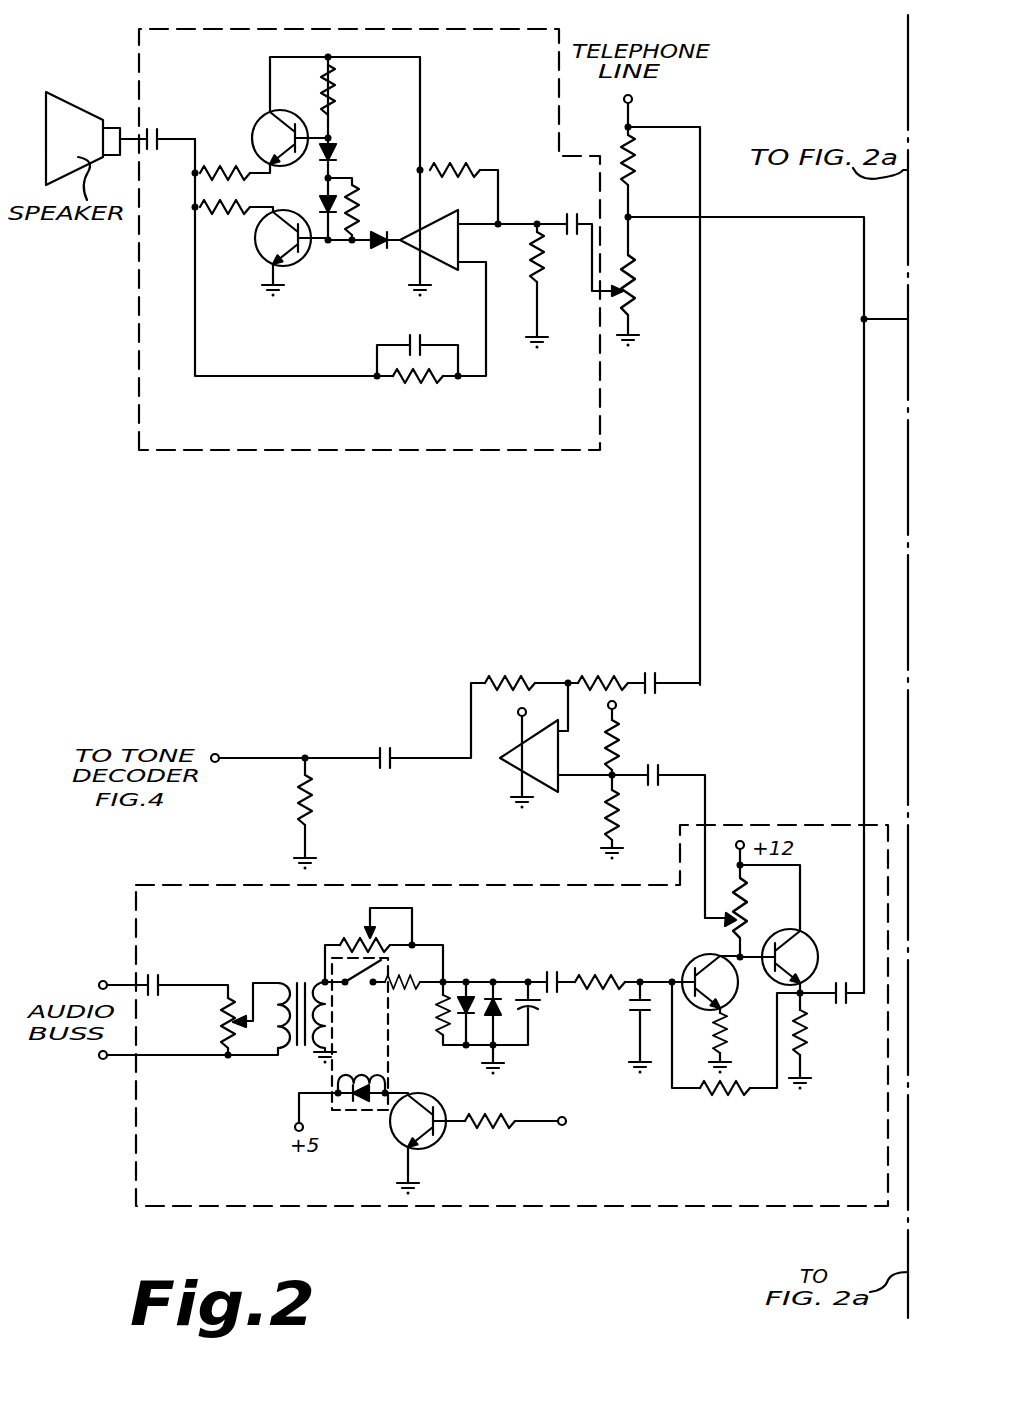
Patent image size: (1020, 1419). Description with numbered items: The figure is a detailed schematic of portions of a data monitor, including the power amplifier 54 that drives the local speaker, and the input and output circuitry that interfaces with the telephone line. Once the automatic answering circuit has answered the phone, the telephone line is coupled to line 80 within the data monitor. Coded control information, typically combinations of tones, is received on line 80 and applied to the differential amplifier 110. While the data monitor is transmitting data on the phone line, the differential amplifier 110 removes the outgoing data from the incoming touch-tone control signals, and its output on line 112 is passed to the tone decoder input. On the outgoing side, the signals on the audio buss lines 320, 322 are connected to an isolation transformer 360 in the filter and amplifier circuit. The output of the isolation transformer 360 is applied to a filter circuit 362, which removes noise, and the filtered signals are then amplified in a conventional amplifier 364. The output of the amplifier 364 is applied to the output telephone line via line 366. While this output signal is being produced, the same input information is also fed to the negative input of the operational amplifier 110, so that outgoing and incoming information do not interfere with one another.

The power amplifier 54 is at (300, 453).
The line 80 is at (704, 467).
The line 366 is at (757, 213).
The line 112 is at (263, 757).
The differential amplifier 110 is at (548, 778).
The audio buss line 322 is at (121, 985).
The audio buss line 320 is at (118, 1060).
The isolation transformer 360 is at (300, 1035).
The filter circuit 362 is at (535, 1035).
The amplifier 364 is at (738, 1101).